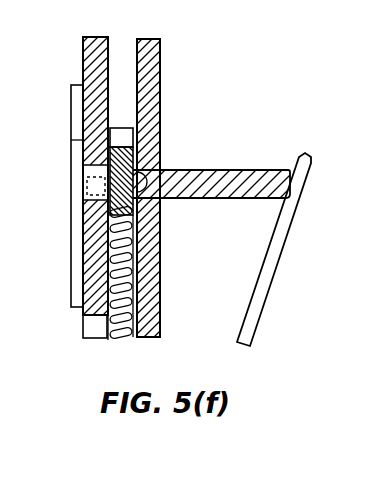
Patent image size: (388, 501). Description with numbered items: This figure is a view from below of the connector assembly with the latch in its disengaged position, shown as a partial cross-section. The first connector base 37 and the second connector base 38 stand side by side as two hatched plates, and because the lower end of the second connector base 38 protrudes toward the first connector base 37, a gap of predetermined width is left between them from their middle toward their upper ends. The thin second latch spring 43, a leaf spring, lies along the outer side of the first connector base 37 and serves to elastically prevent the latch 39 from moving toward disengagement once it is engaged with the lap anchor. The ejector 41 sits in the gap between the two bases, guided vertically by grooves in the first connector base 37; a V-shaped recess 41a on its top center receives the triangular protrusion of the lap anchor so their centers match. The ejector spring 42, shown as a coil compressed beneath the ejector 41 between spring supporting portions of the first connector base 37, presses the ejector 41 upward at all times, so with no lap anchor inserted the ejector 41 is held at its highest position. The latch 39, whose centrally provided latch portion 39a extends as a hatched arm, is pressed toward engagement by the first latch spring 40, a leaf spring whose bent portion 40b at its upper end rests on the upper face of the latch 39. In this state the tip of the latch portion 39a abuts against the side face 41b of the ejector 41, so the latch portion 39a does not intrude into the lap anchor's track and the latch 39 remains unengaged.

The first connector base 37 is at (86, 66).
The second connector base 38 is at (150, 82).
The latch 39 is at (241, 209).
The latch portion 39a is at (231, 170).
The first latch spring 40 is at (279, 262).
The bent portion 40b is at (307, 155).
The ejector 41 is at (140, 212).
The V-shaped recess 41a is at (120, 128).
The side face 41b is at (86, 220).
The ejector spring 42 is at (130, 286).
The second latch spring 43 is at (75, 128).